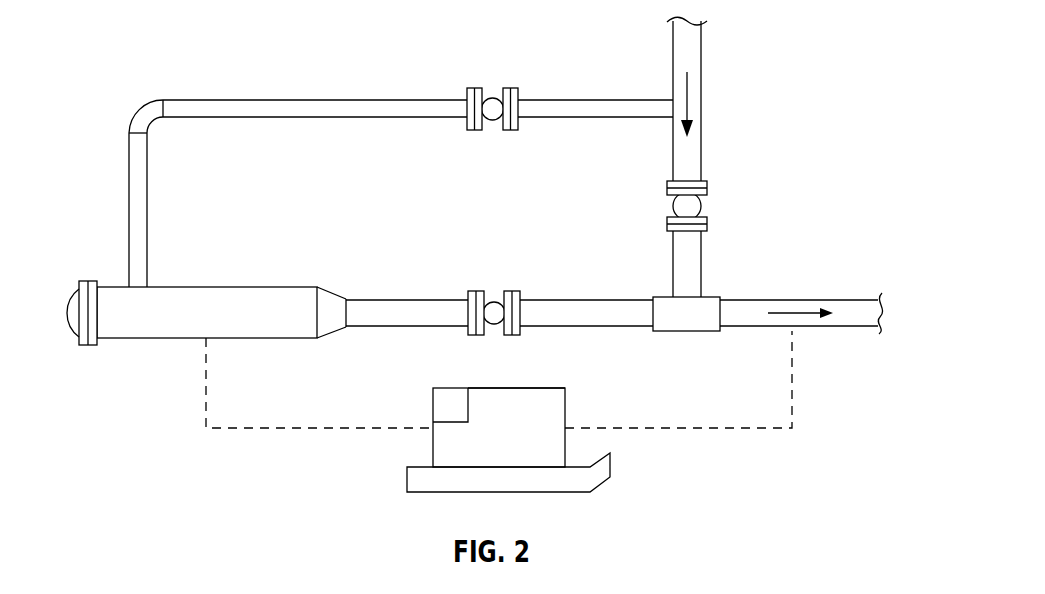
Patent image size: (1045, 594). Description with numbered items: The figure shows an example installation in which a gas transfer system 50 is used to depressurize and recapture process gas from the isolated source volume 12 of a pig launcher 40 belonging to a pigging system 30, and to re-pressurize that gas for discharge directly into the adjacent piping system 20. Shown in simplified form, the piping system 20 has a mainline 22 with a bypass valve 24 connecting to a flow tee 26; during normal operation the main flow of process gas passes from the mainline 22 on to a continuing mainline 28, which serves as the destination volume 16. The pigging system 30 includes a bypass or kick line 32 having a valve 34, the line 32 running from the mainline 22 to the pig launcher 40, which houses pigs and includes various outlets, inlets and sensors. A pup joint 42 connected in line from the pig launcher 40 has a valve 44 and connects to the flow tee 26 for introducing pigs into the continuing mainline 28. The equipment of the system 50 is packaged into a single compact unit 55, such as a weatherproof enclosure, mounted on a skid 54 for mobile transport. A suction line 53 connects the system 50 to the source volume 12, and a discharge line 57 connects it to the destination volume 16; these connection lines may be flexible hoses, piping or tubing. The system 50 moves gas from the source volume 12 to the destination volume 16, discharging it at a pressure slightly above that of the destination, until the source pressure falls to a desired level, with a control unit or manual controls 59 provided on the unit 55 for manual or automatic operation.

The source volume 12 is at (220, 324).
The destination volume 16 is at (809, 288).
The piping system 20 is at (817, 101).
The mainline 22 is at (702, 105).
The bypass valve 24 is at (705, 205).
The flow tee 26 is at (688, 332).
The continuing mainline 28 is at (852, 328).
The pigging system 30 is at (123, 87).
The bypass or kick line 32 is at (595, 100).
The valve 34 is at (494, 88).
The pig launcher 40 is at (287, 287).
The pup joint 42 is at (414, 300).
The valve 44 is at (496, 291).
The gas transfer system 50 is at (513, 441).
The suction line 53 is at (307, 430).
The skid 54 is at (590, 493).
The compact unit 55 is at (545, 388).
The discharge line 57 is at (723, 430).
The control unit or manual controls 59 is at (440, 405).